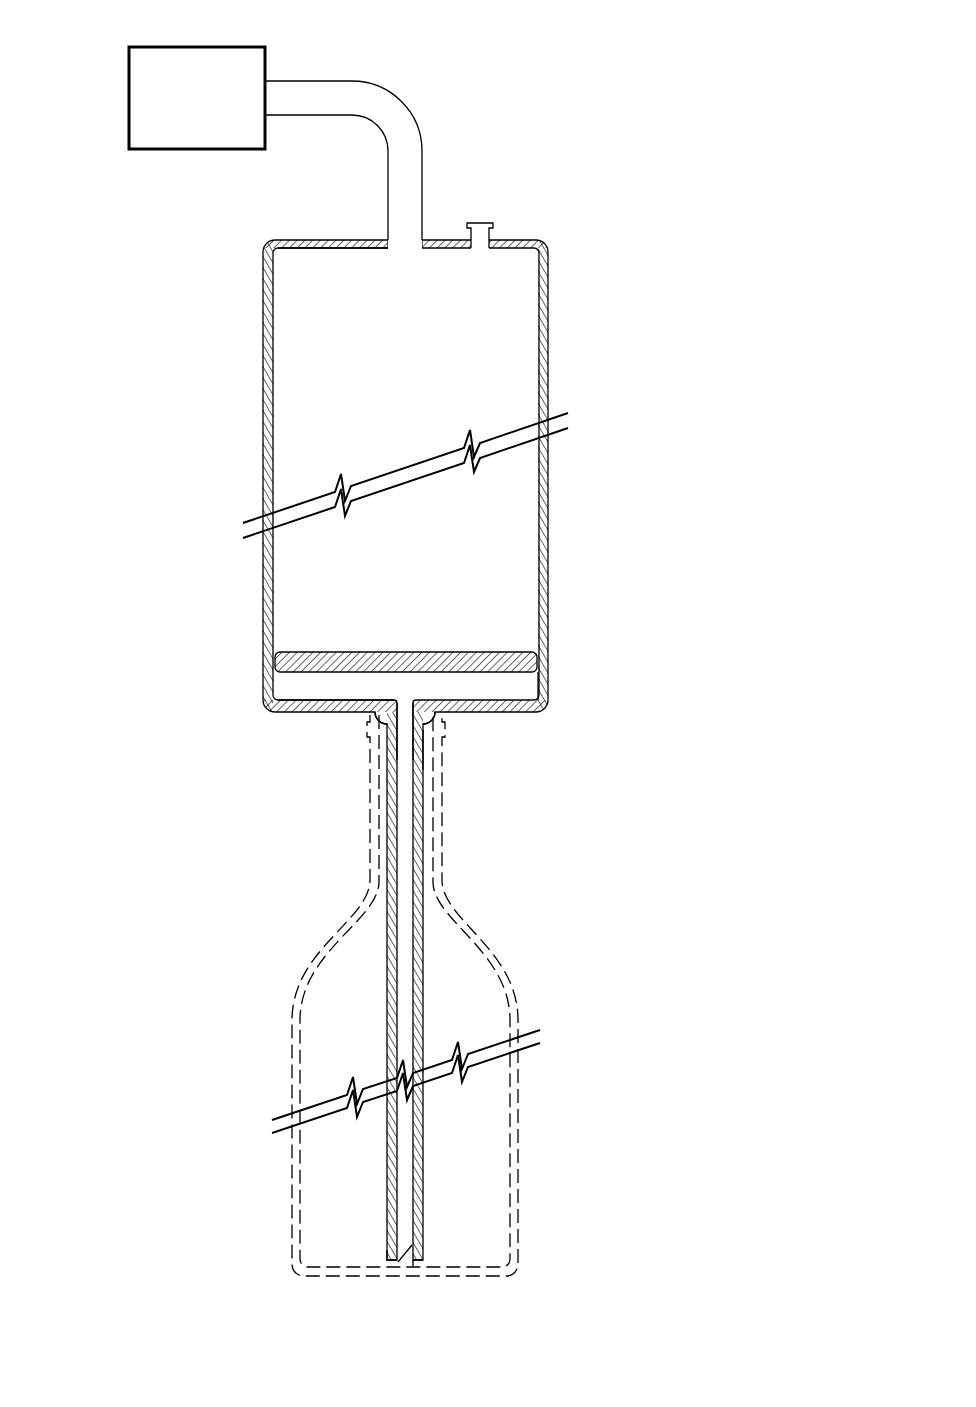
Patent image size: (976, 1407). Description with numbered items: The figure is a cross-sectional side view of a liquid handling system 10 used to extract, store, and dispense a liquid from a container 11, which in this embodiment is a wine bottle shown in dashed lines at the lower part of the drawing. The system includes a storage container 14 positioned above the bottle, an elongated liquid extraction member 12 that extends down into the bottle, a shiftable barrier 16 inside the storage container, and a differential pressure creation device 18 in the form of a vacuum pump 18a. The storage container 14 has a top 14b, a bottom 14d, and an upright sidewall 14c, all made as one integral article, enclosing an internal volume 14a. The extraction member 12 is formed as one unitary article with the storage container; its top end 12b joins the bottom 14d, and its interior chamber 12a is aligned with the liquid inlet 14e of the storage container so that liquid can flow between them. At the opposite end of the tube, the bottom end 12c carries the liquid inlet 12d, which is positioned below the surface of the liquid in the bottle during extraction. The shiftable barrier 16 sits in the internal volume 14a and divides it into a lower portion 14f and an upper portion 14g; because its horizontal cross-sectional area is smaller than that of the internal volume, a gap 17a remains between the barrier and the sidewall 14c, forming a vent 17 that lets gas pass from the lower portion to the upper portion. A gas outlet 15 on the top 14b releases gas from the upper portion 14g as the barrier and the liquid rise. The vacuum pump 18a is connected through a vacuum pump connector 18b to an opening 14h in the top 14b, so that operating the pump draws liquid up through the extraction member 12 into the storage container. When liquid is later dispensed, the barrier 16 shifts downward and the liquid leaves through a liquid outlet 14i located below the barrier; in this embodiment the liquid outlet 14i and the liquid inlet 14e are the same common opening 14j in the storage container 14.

The liquid handling system 10 is at (104, 257).
The container 11 is at (292, 1087).
The elongated liquid extraction member 12 is at (390, 1173).
The interior chamber 12a is at (405, 1248).
The top end 12b is at (385, 722).
The bottom end 12c is at (415, 1266).
The liquid inlet 12d is at (403, 1262).
The storage container 14 is at (549, 338).
The internal volume 14a is at (300, 450).
The top 14b is at (330, 240).
The upright sidewall 14c is at (549, 505).
The bottom 14d is at (326, 712).
The liquid inlet 14e is at (410, 745).
The lower portion 14f is at (277, 682).
The upper portion 14g is at (267, 565).
The opening 14h is at (405, 250).
The liquid outlet 14i is at (424, 722).
The common opening 14j is at (426, 760).
The gas outlet 15 is at (484, 240).
The shiftable barrier 16 is at (478, 657).
The vent 17 is at (562, 661).
The gap 17a is at (546, 690).
The differential pressure creation device 18 is at (438, 92).
The vacuum pump 18a is at (128, 56).
The vacuum pump connector 18b is at (310, 88).